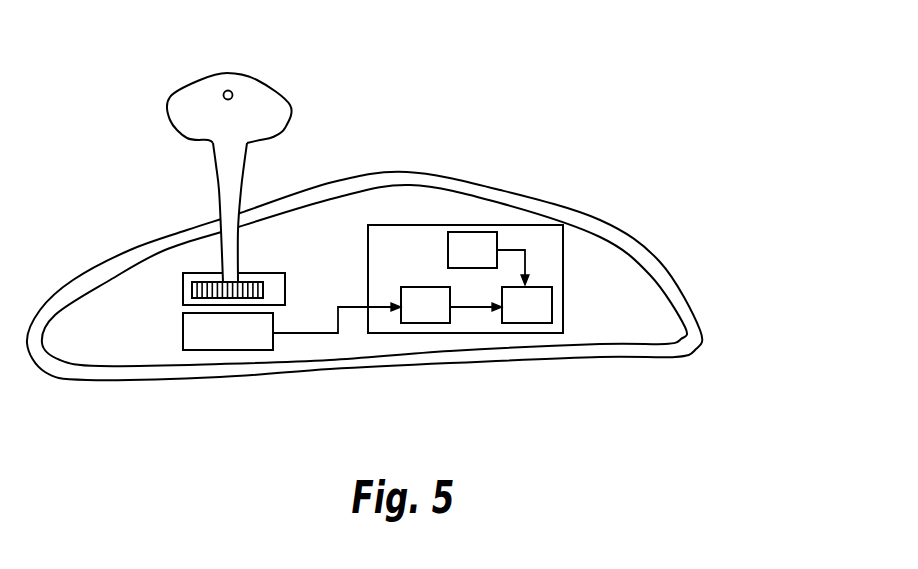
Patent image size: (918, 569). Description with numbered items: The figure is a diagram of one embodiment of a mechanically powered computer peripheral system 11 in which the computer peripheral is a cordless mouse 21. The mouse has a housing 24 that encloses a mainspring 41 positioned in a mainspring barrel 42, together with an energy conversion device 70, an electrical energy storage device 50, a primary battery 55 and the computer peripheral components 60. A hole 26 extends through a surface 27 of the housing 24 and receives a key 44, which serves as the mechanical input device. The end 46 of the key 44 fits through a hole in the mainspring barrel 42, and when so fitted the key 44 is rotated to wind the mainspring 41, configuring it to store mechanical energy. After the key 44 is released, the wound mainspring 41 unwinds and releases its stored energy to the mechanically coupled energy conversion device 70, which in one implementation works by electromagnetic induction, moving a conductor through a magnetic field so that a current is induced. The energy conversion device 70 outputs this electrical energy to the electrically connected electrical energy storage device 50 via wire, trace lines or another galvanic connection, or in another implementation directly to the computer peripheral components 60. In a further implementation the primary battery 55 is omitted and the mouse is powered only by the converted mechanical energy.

The mechanically powered computer peripheral system 11 is at (756, 61).
The cordless mouse 21 is at (518, 153).
The housing 24 is at (605, 222).
The hole 26 is at (214, 205).
The surface 27 is at (333, 182).
The mainspring 41 is at (260, 280).
The mainspring barrel 42 is at (183, 292).
The key 44 is at (283, 92).
The end of the key 46 is at (230, 275).
The electrical energy storage device 50 is at (438, 318).
The primary battery 55 is at (460, 263).
The computer peripheral components 60 is at (515, 318).
The energy conversion device 70 is at (216, 344).